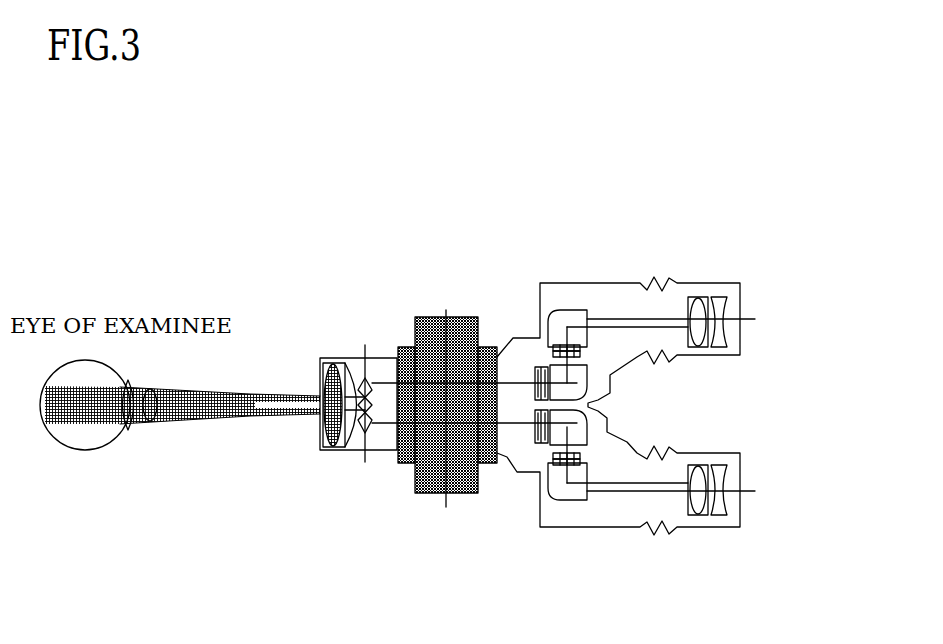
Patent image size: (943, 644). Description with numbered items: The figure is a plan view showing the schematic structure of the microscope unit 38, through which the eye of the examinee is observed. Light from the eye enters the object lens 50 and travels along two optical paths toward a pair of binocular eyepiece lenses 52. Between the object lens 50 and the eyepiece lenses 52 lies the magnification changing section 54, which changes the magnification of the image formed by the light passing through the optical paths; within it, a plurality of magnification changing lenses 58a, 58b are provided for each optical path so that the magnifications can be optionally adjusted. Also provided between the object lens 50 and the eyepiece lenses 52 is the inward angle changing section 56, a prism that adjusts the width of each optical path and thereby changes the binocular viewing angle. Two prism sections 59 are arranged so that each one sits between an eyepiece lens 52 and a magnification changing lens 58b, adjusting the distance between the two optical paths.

The microscope unit 38 is at (502, 202).
The object lens 50 is at (322, 358).
The binocular eyepiece lenses 52 is at (693, 297).
The magnification changing section 54 is at (458, 495).
The inward angle changing section 56 is at (330, 452).
The magnification changing lens 58a is at (405, 340).
The magnification changing lens 58b is at (480, 320).
The prism section 59 is at (572, 310).